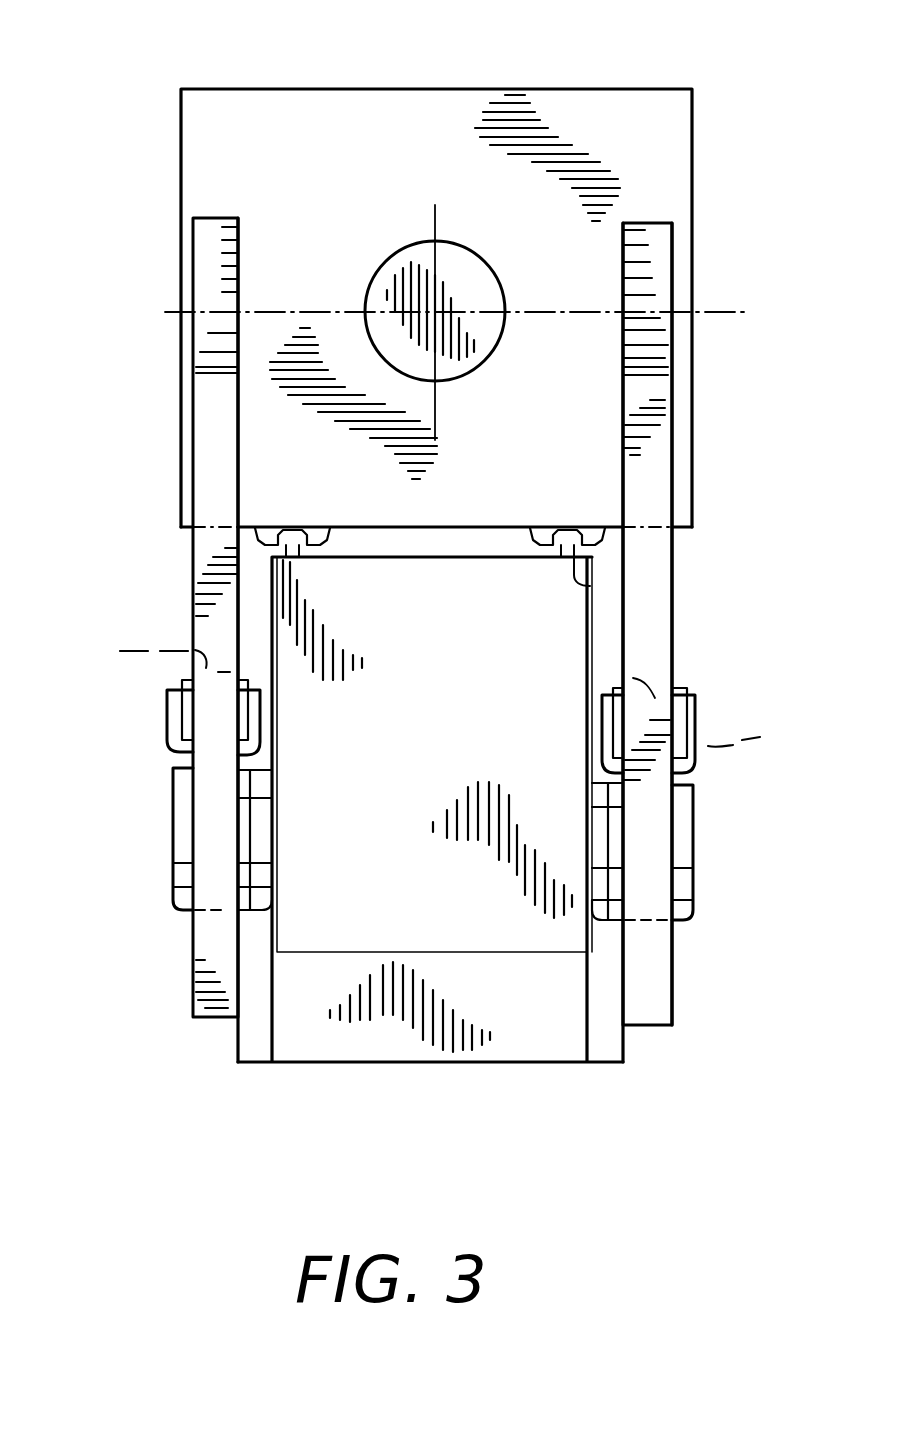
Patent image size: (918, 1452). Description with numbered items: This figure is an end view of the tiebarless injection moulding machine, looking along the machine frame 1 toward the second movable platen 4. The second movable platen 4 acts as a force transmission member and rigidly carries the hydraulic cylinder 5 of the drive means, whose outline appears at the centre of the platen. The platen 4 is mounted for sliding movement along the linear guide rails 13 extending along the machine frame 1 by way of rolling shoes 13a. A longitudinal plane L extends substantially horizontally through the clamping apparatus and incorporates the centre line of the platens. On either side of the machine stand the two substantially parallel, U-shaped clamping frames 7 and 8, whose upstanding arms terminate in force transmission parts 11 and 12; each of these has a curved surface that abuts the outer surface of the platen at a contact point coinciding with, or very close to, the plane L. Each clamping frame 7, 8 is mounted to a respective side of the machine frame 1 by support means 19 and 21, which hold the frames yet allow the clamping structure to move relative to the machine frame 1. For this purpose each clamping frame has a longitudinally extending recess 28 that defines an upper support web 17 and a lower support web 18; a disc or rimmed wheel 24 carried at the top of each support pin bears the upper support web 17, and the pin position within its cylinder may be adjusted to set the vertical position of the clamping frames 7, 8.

The machine frame 1 is at (330, 858).
The second movable platen 4 is at (552, 112).
The hydraulic cylinder 5 is at (465, 300).
The longitudinal plane L is at (180, 304).
The clamping frame 7 is at (673, 673).
The clamping frame 8 is at (193, 544).
The force transmission part 11 is at (660, 290).
The force transmission part 12 is at (215, 403).
The linear guide rails 13 is at (576, 584).
The rolling shoes 13a is at (567, 528).
The upper longitudinal support web 17 is at (650, 647).
The lower longitudinal support web 18 is at (660, 975).
The support means 19 is at (690, 880).
The support means 21 is at (173, 838).
The rimmed wheel 24 is at (185, 722).
The longitudinally extending recess 28 is at (444, 688).